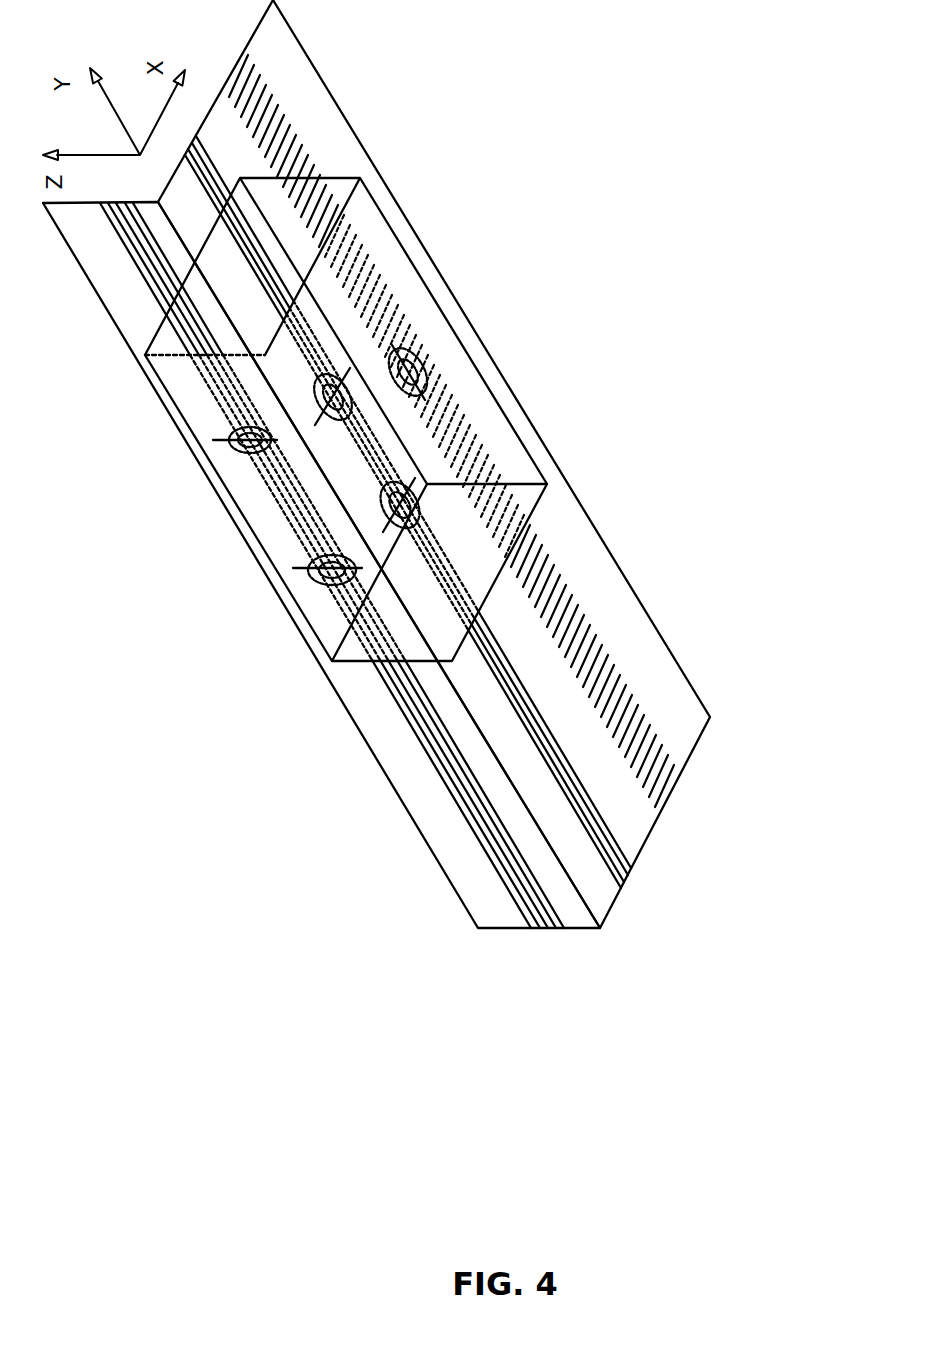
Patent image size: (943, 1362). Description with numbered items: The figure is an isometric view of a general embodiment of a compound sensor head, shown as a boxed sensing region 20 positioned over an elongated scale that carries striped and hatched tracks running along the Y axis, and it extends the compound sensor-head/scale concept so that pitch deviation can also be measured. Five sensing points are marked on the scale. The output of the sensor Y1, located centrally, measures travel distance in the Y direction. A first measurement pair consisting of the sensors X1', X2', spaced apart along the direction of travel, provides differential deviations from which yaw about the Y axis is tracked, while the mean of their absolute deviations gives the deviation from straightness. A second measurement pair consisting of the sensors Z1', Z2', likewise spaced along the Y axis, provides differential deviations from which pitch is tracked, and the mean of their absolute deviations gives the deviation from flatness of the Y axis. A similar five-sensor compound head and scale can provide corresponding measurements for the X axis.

The unit cell box of the waveguide grating 20 is at (372, 228).
The X-direction measurement sensor X1' is at (438, 335).
The X-direction measurement sensor X2' is at (517, 481).
The Y-direction sensor Y1 is at (353, 368).
The Z-direction measurement sensor Z1' is at (162, 433).
The Z-direction measurement sensor Z2' is at (246, 561).